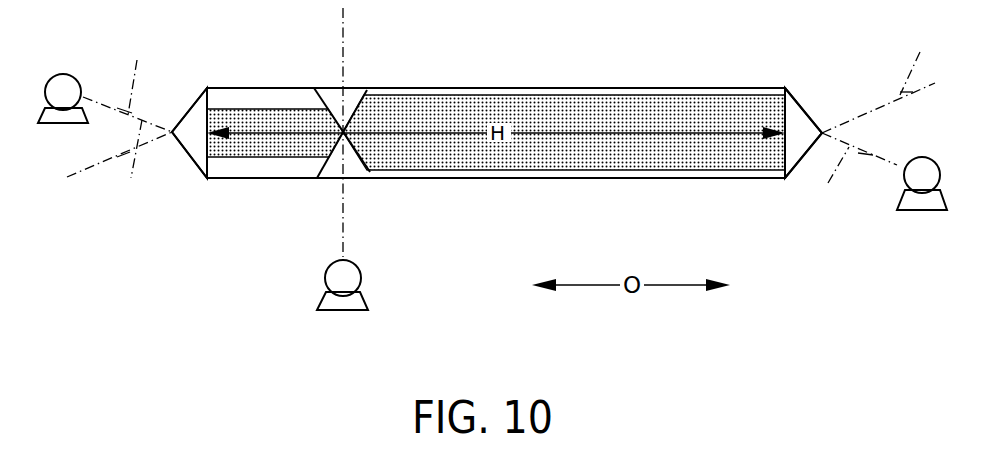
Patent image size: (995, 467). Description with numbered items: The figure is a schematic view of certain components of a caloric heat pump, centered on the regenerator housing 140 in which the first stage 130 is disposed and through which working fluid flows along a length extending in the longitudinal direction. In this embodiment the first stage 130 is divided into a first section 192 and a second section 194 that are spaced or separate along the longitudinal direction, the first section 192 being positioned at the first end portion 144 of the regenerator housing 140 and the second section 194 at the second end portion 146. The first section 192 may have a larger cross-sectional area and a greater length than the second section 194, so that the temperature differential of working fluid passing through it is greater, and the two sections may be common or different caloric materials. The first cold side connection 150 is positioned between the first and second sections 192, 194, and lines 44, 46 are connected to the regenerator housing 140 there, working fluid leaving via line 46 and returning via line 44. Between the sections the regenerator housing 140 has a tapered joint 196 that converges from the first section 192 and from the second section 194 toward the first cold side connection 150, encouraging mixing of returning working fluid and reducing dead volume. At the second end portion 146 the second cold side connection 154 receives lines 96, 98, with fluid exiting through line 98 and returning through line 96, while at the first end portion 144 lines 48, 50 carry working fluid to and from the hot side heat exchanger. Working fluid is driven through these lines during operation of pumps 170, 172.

The regenerator housing 140 is at (510, 88).
The first stage 130 is at (370, 118).
The first cold side connection 150 is at (343, 132).
The second end portion 146 is at (212, 80).
The first end portion 144 is at (788, 72).
The second cold side connection 154 is at (198, 160).
The first section 192 is at (553, 145).
The second section 194 is at (272, 145).
The joint 196 is at (350, 167).
The pump 172 is at (62, 85).
The pump 170 is at (922, 170).
The line 44 is at (330, 224).
The line 46 is at (345, 62).
The line 48 is at (887, 83).
The line 50 is at (842, 179).
The line 96 is at (133, 74).
The line 98 is at (131, 178).